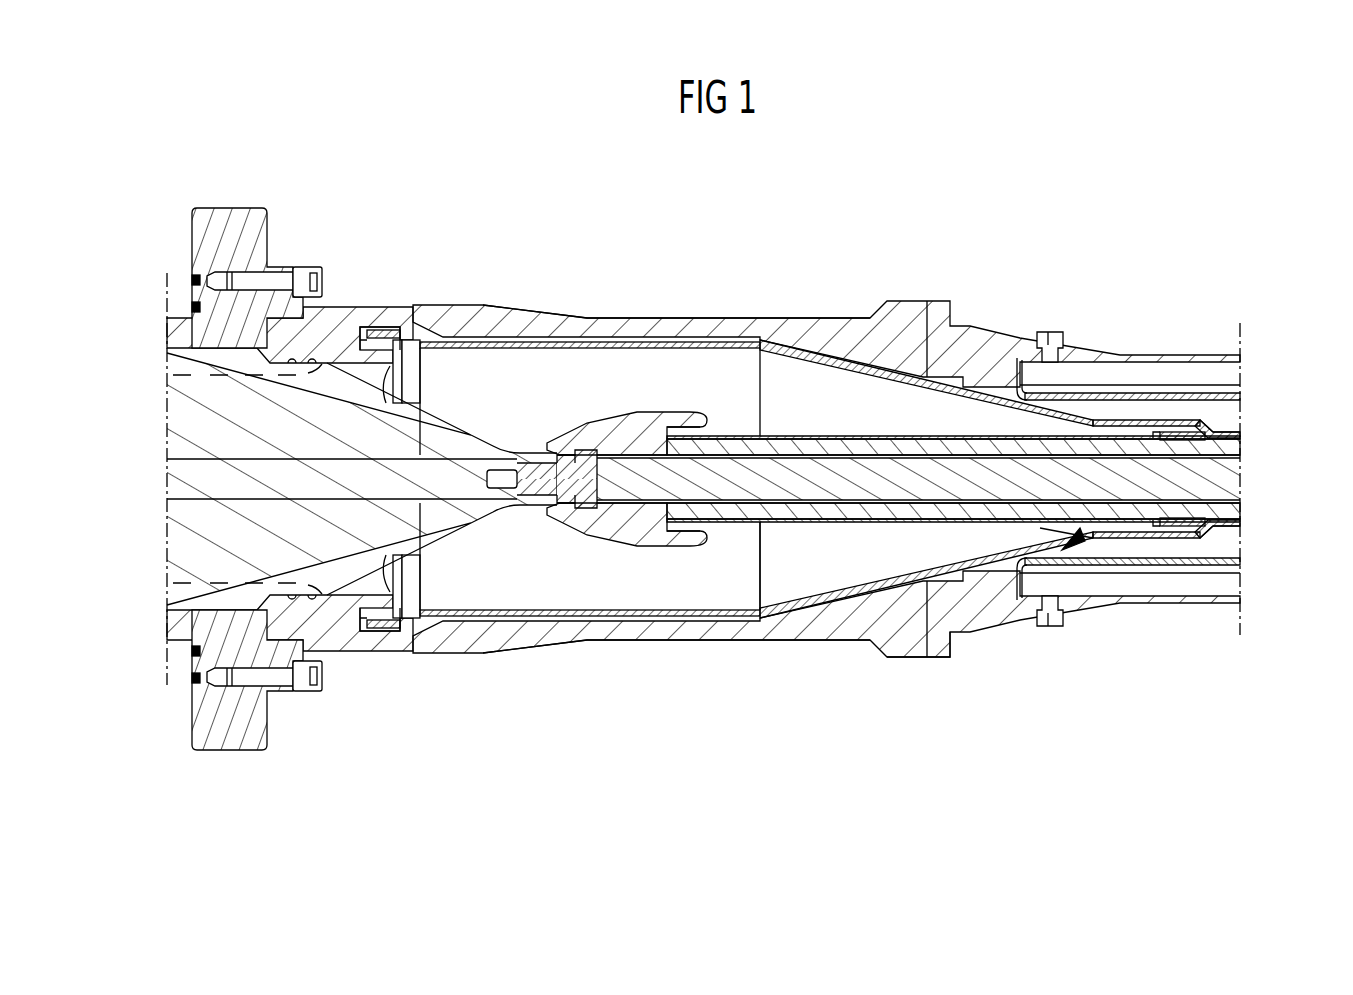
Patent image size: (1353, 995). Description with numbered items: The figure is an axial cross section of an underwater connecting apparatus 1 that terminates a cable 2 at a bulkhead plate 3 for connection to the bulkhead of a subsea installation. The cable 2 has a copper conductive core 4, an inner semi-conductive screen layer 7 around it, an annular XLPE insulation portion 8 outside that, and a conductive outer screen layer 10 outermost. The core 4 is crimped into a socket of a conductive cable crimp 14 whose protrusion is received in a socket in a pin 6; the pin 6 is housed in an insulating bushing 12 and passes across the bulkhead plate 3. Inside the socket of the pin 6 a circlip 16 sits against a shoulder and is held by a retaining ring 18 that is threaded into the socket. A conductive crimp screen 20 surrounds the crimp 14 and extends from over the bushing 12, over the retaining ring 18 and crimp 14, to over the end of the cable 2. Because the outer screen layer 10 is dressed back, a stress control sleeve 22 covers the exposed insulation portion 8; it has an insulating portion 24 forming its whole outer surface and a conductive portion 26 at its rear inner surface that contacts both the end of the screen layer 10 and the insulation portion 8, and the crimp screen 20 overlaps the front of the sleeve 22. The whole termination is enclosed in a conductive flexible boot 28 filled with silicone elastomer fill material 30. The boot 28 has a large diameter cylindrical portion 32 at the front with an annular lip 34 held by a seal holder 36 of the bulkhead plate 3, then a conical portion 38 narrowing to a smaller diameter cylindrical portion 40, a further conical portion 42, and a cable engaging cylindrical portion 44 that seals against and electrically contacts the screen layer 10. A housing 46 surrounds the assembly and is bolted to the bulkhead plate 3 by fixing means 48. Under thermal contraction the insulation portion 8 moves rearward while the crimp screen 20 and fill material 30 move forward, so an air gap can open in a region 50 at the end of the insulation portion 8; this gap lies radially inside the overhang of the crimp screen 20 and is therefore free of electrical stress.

The underwater connecting apparatus 1 is at (803, 212).
The cable 2 is at (1262, 457).
The bulkhead plate 3 is at (237, 207).
The conductive core 4 is at (875, 486).
The pin 6 is at (355, 457).
The inner semi-conductive screen layer 7 is at (910, 455).
The insulation portion 8 is at (993, 516).
The conductive outer screen layer 10 is at (1215, 531).
The insulating bushing 12 is at (400, 340).
The cable crimp 14 is at (585, 454).
The circlip 16 is at (550, 450).
The retaining ring 18 is at (577, 508).
The conductive crimp screen 20 is at (683, 535).
The stress control sleeve 22 is at (1072, 542).
The insulating portion 24 is at (782, 528).
The conductive portion 26 is at (1177, 431).
The flexible boot 28 is at (497, 306).
The silicone elastomer fill material 30 is at (708, 380).
The large diameter cylindrical portion 32 is at (605, 341).
The annular lip 34 is at (367, 631).
The seal holder 36 is at (395, 629).
The conical portion 38 is at (805, 345).
The smaller diameter cylindrical portion 40 is at (1135, 419).
The conical portion 42 is at (1216, 419).
The cable engaging cylindrical portion 44 is at (1220, 524).
The housing 46 is at (607, 641).
The fixing means 48 is at (299, 271).
The region 50 is at (655, 546).